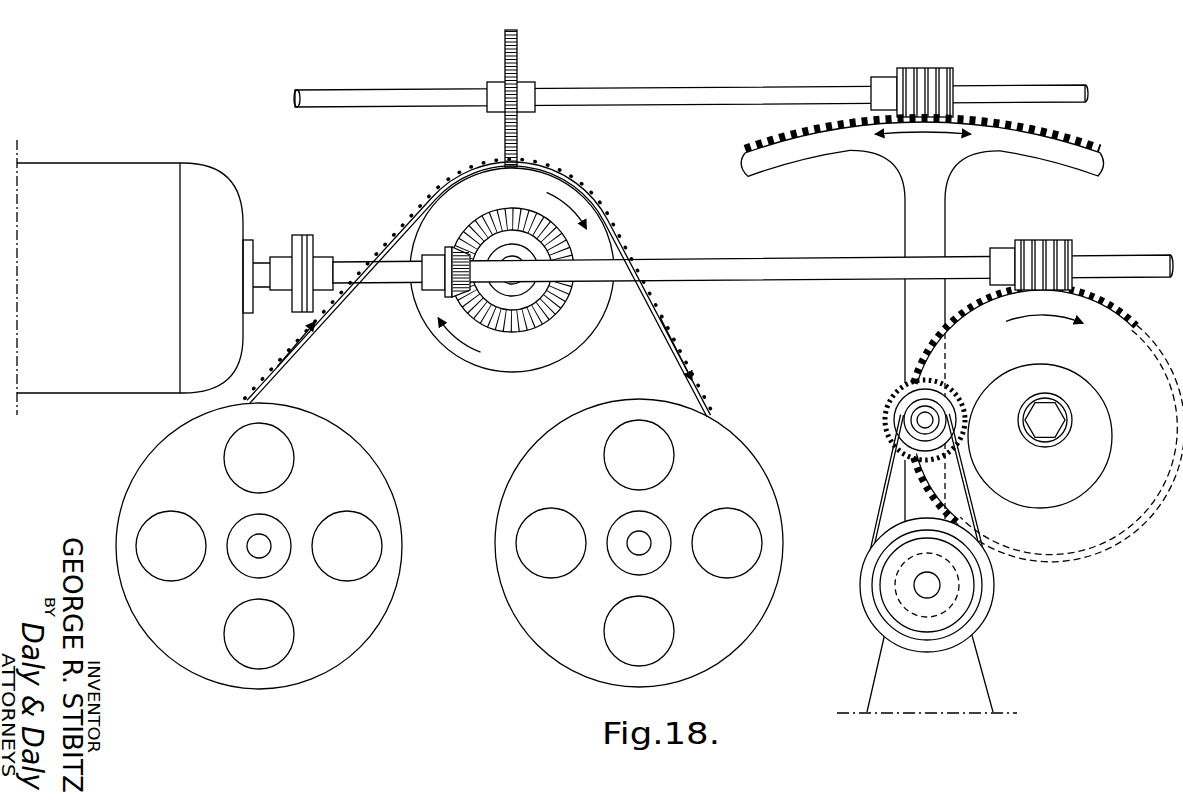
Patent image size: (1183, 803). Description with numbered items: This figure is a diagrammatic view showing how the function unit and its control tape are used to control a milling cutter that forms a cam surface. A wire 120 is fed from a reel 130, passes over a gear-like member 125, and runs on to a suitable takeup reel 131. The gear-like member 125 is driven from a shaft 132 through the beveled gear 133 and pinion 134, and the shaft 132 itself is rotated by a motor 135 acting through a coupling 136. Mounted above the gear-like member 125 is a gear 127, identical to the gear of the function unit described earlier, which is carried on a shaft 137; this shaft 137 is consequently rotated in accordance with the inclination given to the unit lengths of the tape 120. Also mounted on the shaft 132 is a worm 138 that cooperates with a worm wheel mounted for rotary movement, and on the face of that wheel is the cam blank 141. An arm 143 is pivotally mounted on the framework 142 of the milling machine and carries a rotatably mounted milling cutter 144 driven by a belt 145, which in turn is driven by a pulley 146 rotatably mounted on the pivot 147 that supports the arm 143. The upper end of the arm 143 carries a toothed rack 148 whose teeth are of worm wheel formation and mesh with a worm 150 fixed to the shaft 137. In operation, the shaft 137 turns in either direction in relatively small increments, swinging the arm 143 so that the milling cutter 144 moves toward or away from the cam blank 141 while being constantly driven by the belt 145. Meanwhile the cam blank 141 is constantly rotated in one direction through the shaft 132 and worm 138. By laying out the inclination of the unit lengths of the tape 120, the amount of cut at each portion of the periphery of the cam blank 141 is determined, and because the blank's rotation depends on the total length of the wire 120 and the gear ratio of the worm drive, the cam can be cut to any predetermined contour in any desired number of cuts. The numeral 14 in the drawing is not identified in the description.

The worm wheel 14 is at (1125, 318).
The wire 120 is at (321, 342).
The gear-like member 125 is at (567, 338).
The gear 127 is at (517, 140).
The reel 130 is at (365, 615).
The takeup reel 131 is at (540, 615).
The shaft 132 is at (693, 268).
The beveled gear 133 is at (470, 228).
The pinion 134 is at (440, 288).
The motor 135 is at (200, 182).
The coupling 136 is at (295, 253).
The shaft 137 is at (667, 95).
The worm 138 is at (1035, 258).
The cam blank 141 is at (1093, 427).
The framework 142 is at (967, 670).
The arm 143 is at (917, 288).
The milling cutter 144 is at (892, 413).
The belt 145 is at (892, 477).
The pulley 146 is at (860, 578).
The pivot 147 is at (917, 589).
The toothed rack 148 is at (1077, 153).
The worm 150 is at (925, 90).